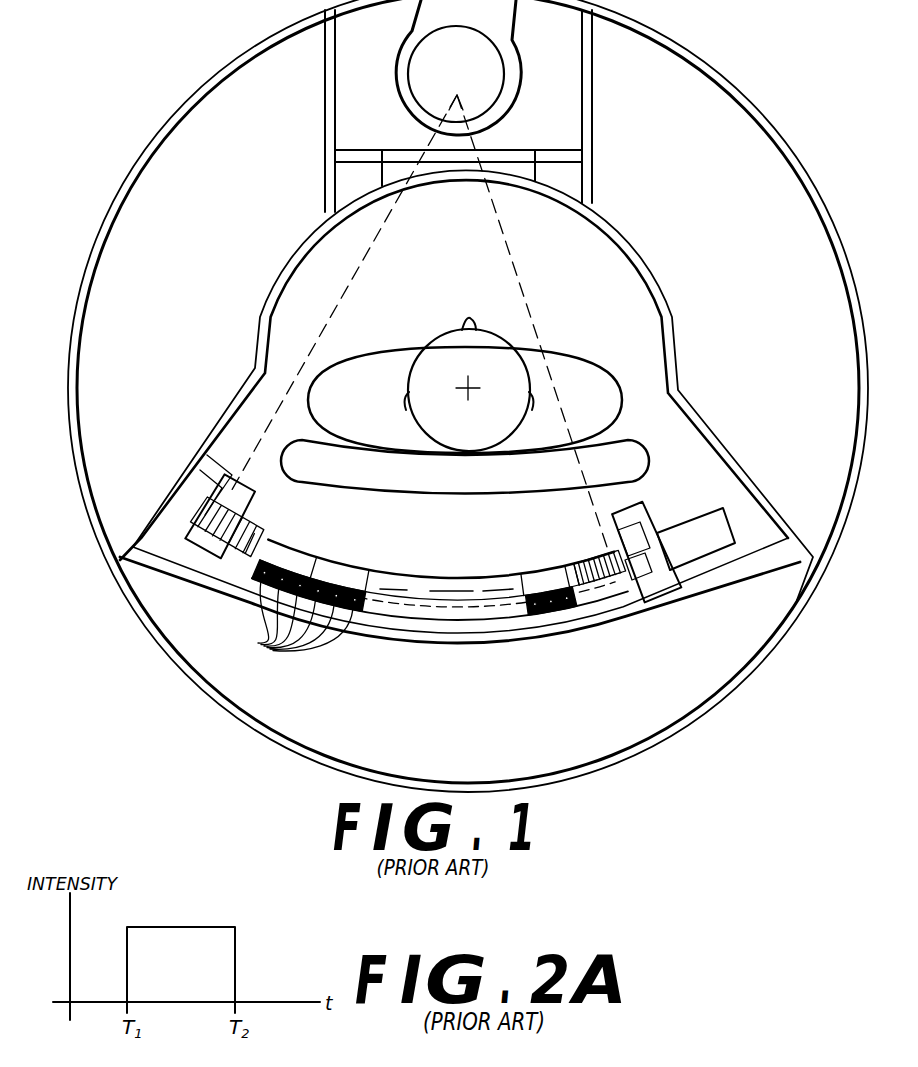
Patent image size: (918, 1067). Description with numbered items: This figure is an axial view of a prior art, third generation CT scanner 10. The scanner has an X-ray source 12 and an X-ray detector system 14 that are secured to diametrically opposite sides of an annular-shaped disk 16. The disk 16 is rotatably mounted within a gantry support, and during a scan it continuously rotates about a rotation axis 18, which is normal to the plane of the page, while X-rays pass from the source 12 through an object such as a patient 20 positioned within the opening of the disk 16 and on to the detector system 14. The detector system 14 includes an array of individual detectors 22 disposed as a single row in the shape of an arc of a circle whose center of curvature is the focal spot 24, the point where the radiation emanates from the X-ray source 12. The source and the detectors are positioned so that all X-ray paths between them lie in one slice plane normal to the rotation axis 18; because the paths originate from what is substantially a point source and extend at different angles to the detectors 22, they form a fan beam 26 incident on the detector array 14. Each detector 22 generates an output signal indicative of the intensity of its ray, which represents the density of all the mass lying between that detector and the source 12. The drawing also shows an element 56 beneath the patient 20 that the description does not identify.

The CT scanner 10 is at (706, 720).
The X-ray source 12 is at (497, 108).
The X-ray detector system 14 is at (421, 580).
The annular-shaped disk 16 is at (783, 139).
The rotation axis 18 is at (473, 385).
The patient 20 is at (590, 362).
The individual detectors 22 is at (292, 619).
The focal spot 24 is at (457, 94).
The fan beam 26 is at (519, 273).
The patient support cushion 56 is at (632, 462).